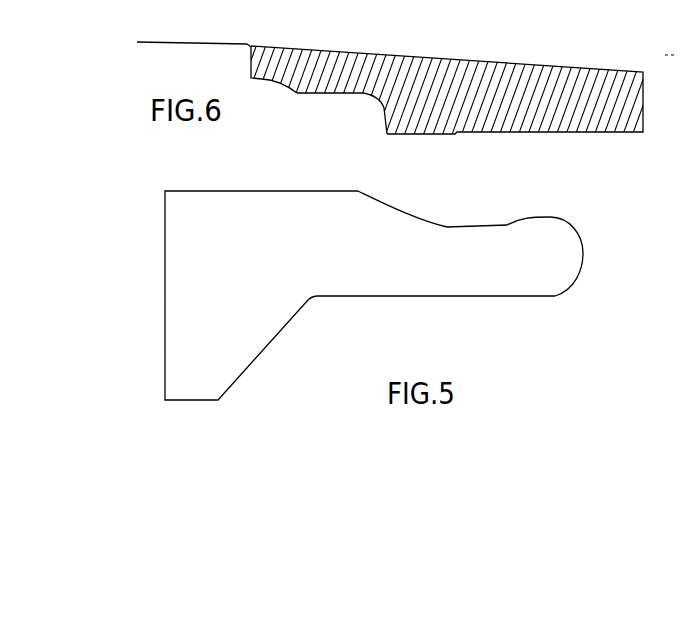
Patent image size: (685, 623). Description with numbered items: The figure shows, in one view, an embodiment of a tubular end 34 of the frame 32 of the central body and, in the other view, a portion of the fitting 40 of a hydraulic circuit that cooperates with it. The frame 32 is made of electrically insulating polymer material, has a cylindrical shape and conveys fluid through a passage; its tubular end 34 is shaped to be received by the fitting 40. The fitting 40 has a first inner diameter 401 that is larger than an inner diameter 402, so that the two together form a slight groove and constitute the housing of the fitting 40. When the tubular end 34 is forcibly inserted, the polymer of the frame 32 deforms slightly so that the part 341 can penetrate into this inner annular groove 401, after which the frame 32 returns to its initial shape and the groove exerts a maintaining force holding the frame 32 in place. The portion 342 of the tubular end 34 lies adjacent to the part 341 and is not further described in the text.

In FIG. 6, the frame 32 is at (192, 22).
In FIG. 5, the frame 32 is at (187, 262).
In FIG. 6, the tubular end 34 is at (240, 0).
In FIG. 5, the tubular end 34 is at (321, 340).
In FIG. 5, the part of the tubular end 341 is at (525, 215).
In FIG. 5, the recessed surface portion 342 is at (457, 225).
In FIG. 6, the fitting 40 is at (498, 72).
In FIG. 6, the first inner diameter 401 is at (368, 97).
In FIG. 6, the inner diameter 402 is at (300, 95).